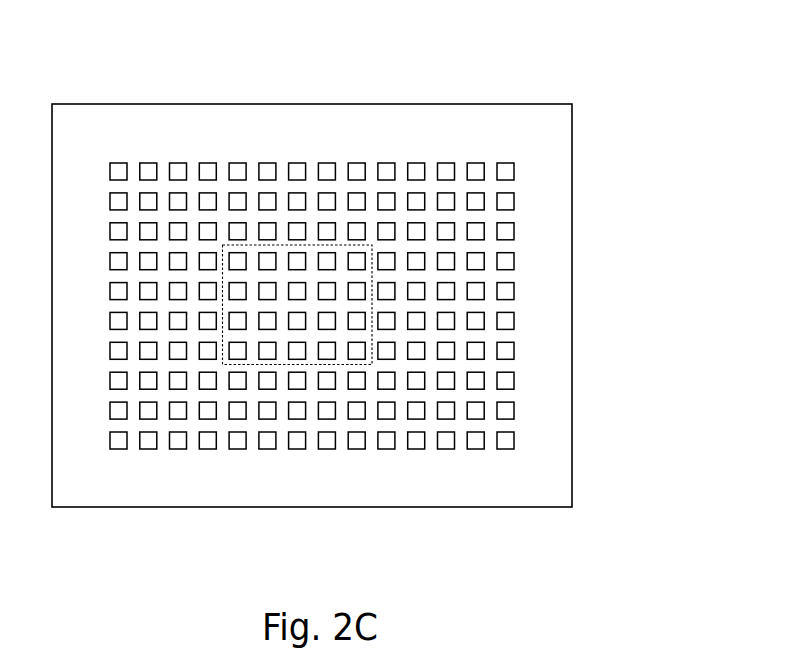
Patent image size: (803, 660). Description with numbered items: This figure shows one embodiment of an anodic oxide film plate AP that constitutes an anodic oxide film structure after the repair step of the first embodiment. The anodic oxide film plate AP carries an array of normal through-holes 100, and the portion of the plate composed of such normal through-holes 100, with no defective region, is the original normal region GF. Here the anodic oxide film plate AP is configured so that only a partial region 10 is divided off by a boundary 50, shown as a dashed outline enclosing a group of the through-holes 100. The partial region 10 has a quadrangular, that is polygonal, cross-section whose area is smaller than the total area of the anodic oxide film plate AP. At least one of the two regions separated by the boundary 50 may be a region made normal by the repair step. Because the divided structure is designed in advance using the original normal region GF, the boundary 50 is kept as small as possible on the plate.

The normal through-hole 100 is at (500, 413).
The partial region 10 is at (340, 366).
The boundary 50 is at (372, 333).
The original normal region GF is at (528, 453).
The anodic oxide film plate AP is at (548, 63).